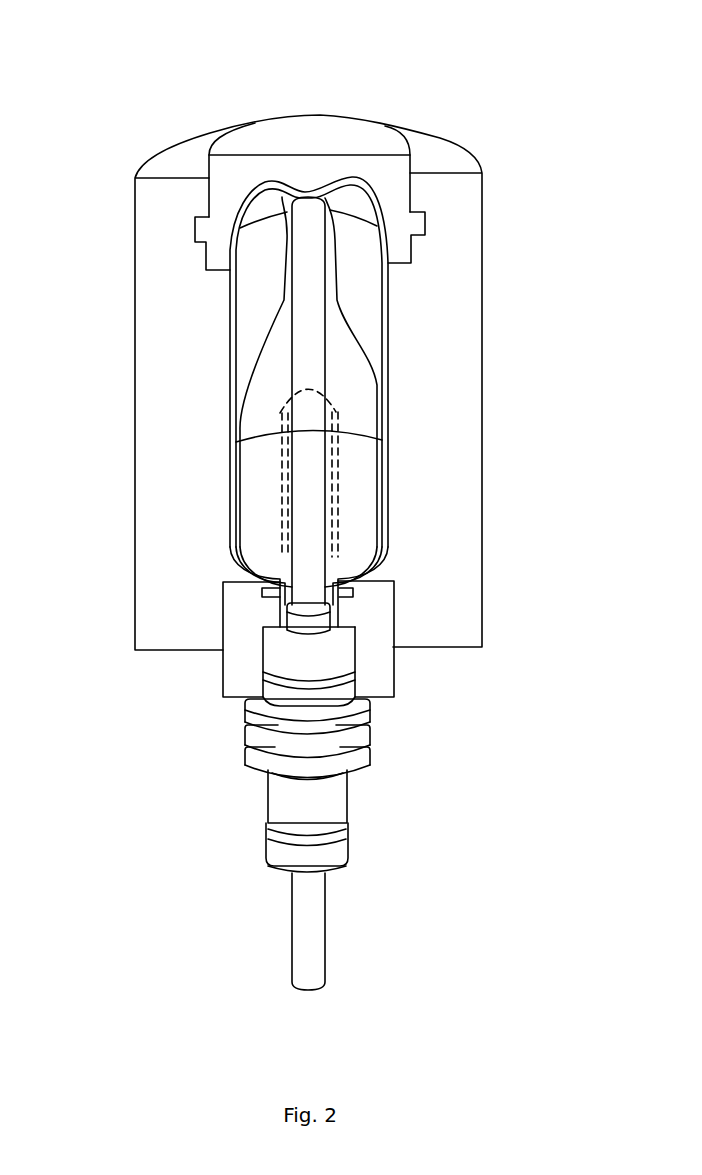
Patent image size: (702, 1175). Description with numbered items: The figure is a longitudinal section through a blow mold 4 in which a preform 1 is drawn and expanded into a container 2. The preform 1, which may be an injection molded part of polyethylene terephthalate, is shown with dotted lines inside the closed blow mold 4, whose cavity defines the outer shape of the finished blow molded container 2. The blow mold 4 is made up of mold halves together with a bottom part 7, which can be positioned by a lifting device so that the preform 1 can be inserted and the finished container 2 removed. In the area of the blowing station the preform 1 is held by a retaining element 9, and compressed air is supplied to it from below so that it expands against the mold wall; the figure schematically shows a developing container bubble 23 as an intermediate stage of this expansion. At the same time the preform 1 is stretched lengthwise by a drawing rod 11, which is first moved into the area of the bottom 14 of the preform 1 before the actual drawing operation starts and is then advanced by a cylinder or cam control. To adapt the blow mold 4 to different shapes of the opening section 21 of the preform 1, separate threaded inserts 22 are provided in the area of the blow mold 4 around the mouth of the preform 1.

The preform 1 is at (333, 510).
The container 2 is at (228, 392).
The blow mold 4 is at (150, 260).
The bottom part 7 is at (318, 130).
The retaining element 9 is at (245, 743).
The drawing rod 11 is at (297, 957).
The bottom 14 is at (342, 418).
The opening section 21 is at (278, 613).
The threaded inserts 22 is at (388, 677).
The developing container bubble 23 is at (340, 330).